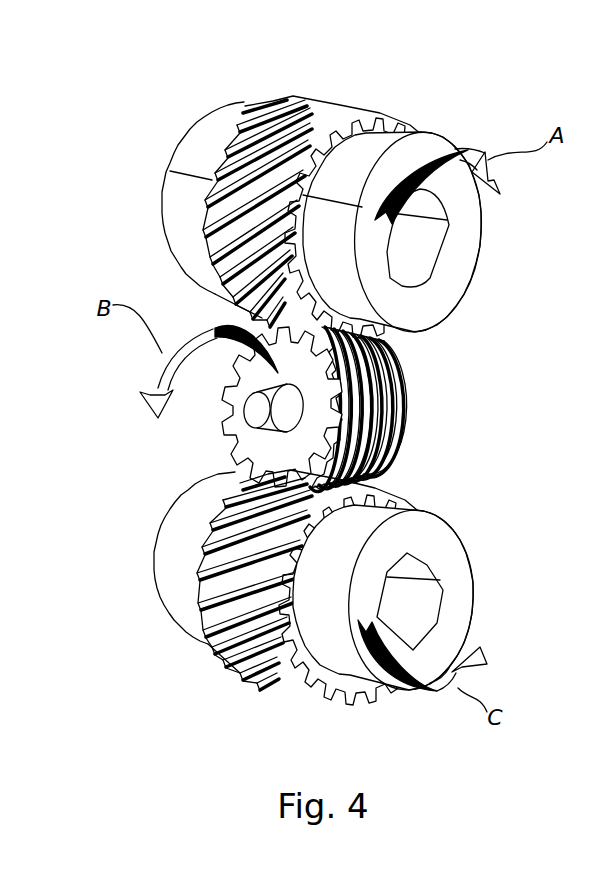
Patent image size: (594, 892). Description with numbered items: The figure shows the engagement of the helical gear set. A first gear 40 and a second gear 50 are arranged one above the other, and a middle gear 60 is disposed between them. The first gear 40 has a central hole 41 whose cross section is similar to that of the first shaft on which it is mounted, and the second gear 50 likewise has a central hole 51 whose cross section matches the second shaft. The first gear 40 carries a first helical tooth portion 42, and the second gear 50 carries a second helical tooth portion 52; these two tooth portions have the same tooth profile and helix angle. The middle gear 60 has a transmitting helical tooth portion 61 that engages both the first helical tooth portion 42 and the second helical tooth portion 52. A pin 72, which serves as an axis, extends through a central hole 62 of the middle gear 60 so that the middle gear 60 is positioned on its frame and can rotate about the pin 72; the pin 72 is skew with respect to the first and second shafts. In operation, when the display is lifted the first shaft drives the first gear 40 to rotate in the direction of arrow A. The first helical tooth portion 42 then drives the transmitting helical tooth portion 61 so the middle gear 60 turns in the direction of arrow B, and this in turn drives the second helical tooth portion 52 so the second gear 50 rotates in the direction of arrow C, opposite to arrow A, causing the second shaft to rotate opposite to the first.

The first gear 40 is at (421, 212).
The central hole 41 is at (420, 245).
The first helical tooth portion 42 is at (307, 121).
The second gear 50 is at (410, 575).
The central hole 51 is at (422, 593).
The second helical tooth portion 52 is at (253, 680).
The middle gear 60 is at (295, 411).
The transmitting helical tooth portion 61 is at (385, 380).
The central hole 62 is at (272, 412).
The pin 72 is at (255, 410).